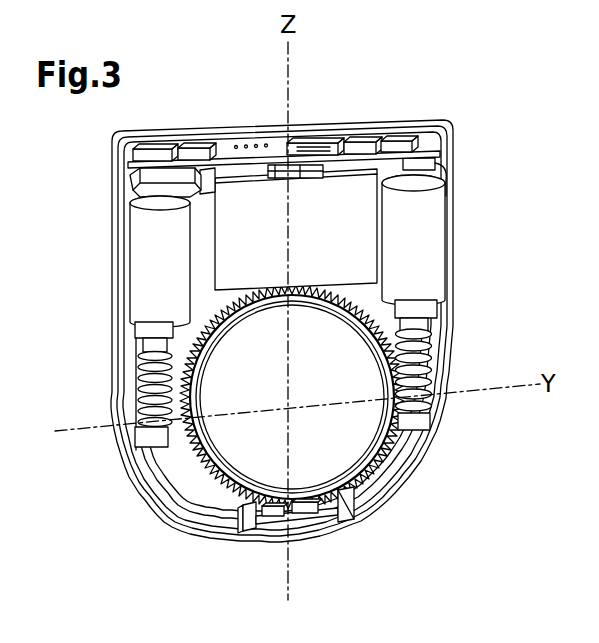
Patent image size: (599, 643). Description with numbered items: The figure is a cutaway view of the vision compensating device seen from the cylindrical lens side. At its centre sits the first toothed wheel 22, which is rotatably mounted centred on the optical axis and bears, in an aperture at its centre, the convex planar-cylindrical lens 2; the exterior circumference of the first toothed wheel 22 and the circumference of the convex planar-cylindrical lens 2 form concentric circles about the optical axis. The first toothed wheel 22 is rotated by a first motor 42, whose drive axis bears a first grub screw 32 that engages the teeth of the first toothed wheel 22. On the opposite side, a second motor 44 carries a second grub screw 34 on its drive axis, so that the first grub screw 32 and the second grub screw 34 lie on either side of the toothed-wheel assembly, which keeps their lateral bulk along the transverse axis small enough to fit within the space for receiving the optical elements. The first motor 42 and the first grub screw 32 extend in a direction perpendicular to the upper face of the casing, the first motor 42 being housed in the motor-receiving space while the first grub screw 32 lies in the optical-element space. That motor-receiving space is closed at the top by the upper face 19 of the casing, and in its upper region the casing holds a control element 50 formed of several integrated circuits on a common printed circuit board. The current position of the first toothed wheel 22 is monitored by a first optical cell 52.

The convex planar-cylindrical lens 2 is at (251, 444).
The upper face of the casing 19 is at (400, 118).
The first toothed wheel 22 is at (367, 457).
The first grub screw 32 is at (433, 367).
The second grub screw 34 is at (141, 387).
The first motor 42 is at (433, 260).
The second motor 44 is at (143, 272).
The control element 50 is at (314, 134).
The first optical cell 52 is at (275, 522).